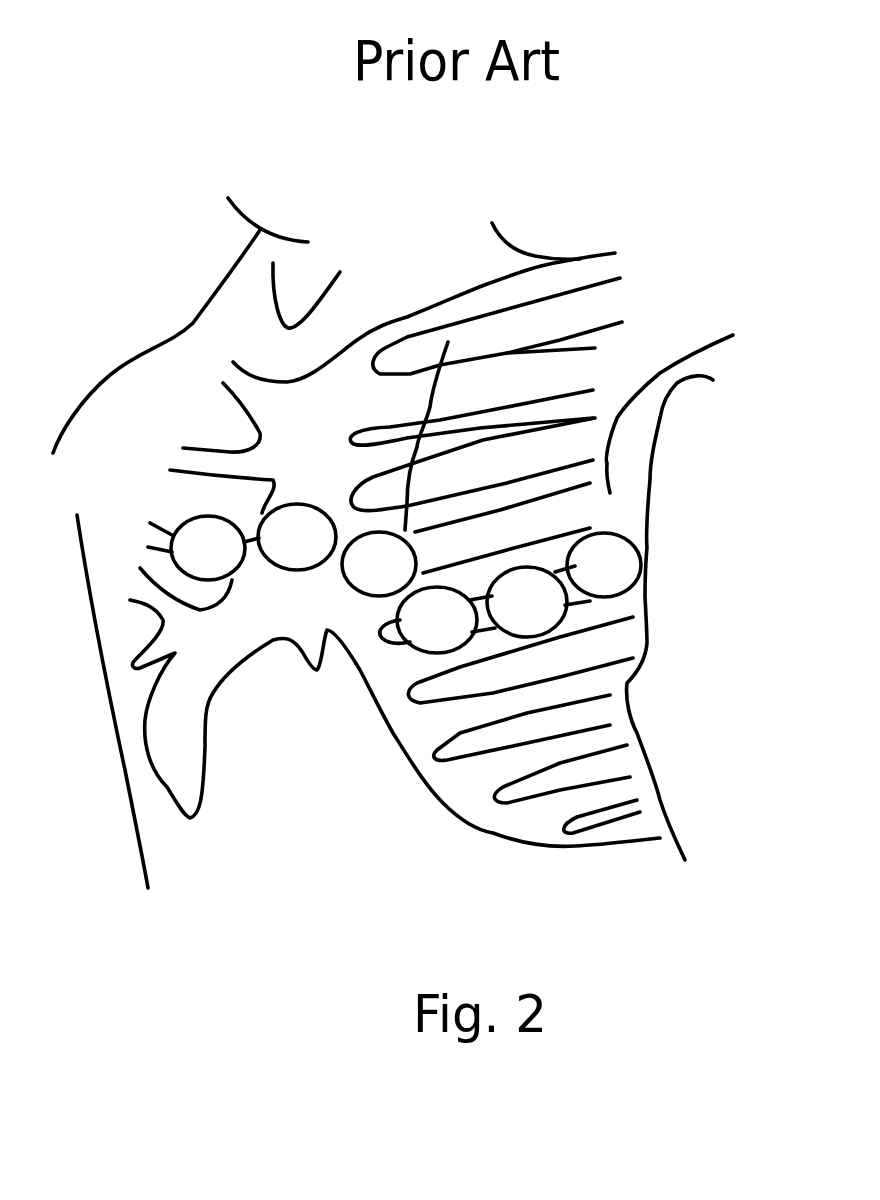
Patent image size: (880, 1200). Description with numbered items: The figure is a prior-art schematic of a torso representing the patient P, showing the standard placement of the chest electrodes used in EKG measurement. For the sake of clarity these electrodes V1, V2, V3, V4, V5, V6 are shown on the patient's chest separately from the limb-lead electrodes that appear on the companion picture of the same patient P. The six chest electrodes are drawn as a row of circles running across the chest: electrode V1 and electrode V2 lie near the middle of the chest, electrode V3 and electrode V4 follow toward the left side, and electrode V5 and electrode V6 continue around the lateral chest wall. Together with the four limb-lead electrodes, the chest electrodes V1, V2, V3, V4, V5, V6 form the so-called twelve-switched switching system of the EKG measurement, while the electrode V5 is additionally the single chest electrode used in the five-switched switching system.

The electrode V1 is at (208, 548).
The electrode V2 is at (297, 537).
The electrode V3 is at (379, 564).
The electrode V4 is at (437, 620).
The electrode V5 is at (527, 602).
The electrode V6 is at (604, 565).
The patient P is at (650, 597).